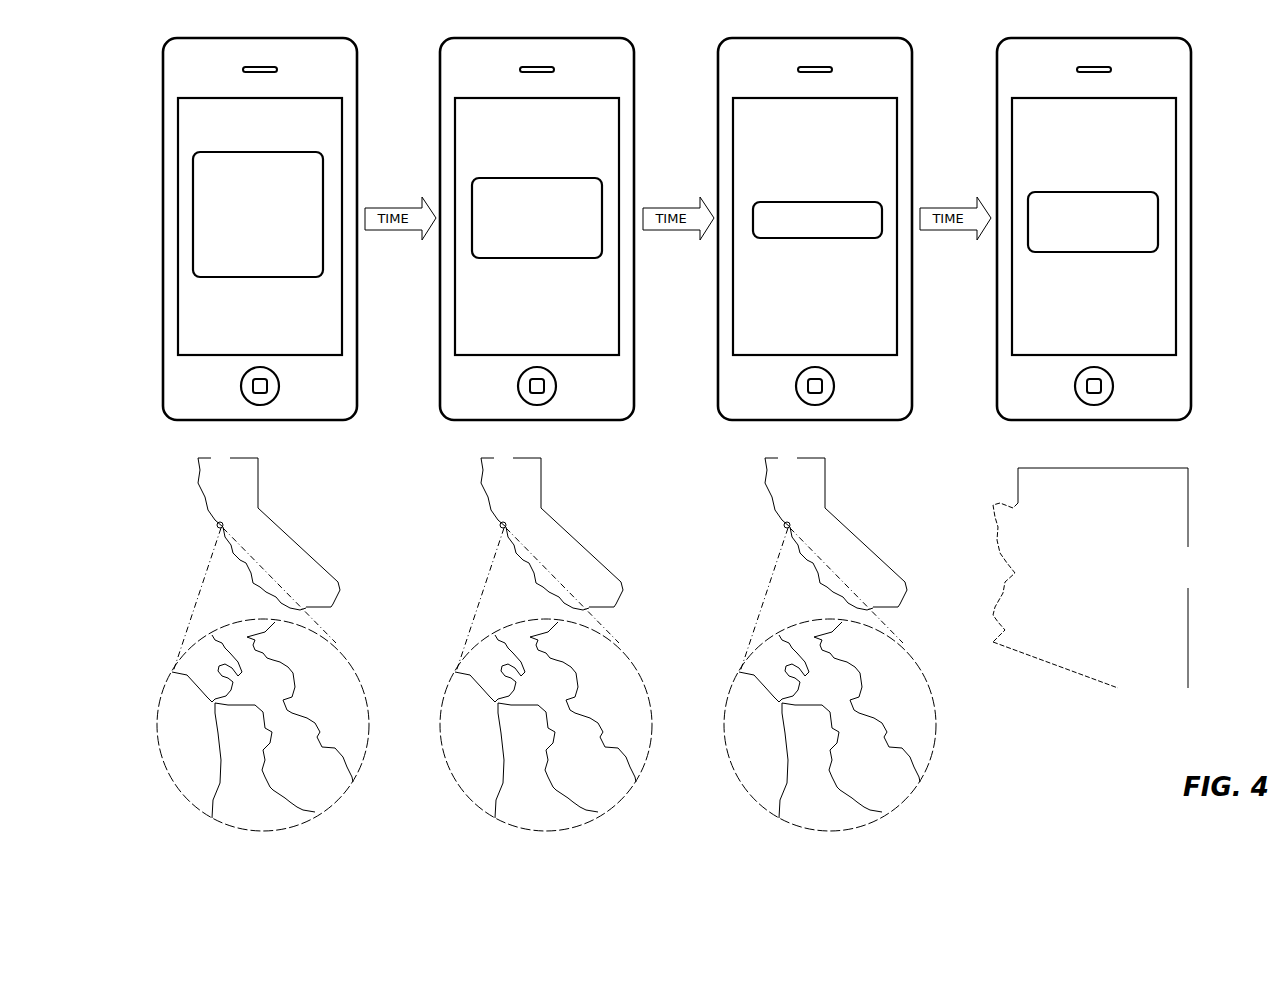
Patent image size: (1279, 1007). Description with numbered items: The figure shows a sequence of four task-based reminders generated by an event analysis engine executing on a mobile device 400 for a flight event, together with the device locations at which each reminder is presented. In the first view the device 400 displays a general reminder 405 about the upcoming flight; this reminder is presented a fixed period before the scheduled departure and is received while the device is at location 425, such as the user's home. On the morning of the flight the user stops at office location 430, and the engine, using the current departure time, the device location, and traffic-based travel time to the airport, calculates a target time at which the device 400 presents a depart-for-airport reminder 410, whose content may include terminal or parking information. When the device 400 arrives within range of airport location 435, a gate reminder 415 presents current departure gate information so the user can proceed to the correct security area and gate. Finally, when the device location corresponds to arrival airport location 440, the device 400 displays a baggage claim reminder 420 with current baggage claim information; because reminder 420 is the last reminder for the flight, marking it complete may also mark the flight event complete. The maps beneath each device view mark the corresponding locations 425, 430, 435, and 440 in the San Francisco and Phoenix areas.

The device 400 is at (357, 58).
The general reminder 405 is at (323, 181).
The depart-for-airport reminder 410 is at (602, 199).
The departure gate reminder 415 is at (882, 216).
The baggage claim reminder 420 is at (1158, 217).
The home location 425 is at (210, 644).
The office location 430 is at (530, 703).
The airport location 435 is at (826, 793).
The arrival airport location 440 is at (1093, 608).